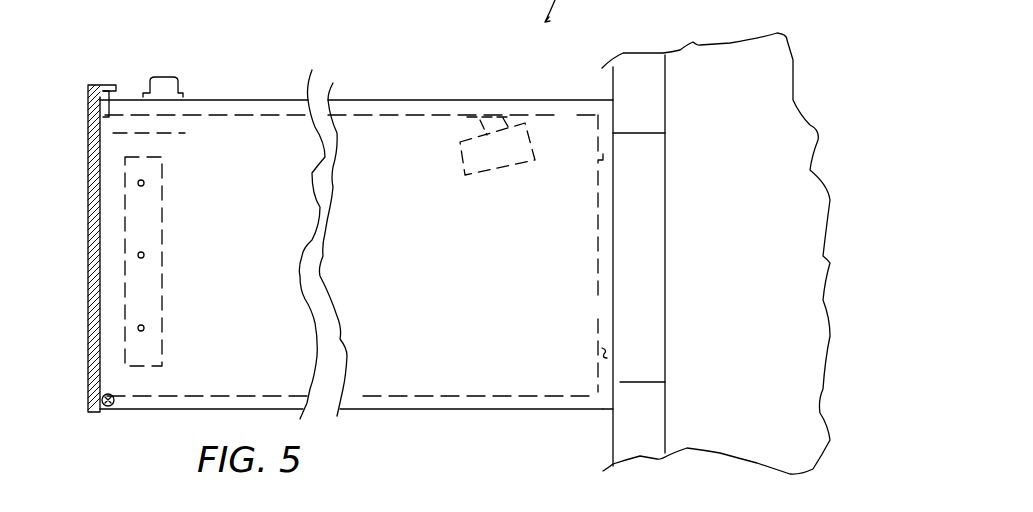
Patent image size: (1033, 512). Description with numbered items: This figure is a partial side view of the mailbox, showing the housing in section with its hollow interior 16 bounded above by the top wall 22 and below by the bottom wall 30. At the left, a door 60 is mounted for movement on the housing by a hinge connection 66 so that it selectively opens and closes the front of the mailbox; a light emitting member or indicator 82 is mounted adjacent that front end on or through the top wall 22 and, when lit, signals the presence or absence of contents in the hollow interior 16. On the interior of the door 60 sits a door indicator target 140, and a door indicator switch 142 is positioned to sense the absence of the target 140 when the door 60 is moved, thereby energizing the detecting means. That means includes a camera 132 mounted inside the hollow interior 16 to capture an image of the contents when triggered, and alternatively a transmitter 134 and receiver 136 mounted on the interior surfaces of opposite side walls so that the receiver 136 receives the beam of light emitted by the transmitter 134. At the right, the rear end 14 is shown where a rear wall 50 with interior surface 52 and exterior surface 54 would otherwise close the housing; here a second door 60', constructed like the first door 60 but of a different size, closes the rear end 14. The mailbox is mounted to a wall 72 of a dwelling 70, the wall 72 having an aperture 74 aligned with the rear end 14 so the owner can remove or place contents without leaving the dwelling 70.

The rear end 14 is at (583, 262).
The hollow interior 16 is at (385, 243).
The top wall 22 is at (355, 100).
The bottom wall 30 is at (385, 404).
The rear wall 50 is at (603, 397).
The interior surface 52 is at (598, 365).
The exterior surface 54 is at (610, 368).
The door 60 is at (84, 219).
The door 60' is at (684, 266).
The hinge connection 66 is at (113, 410).
The dwelling 70 is at (783, 419).
The wall 72 is at (647, 73).
The aperture 74 is at (642, 140).
The light emitting member or indicator 82 is at (172, 72).
The camera 132 is at (503, 163).
The transmitter 134 is at (160, 328).
The receiver 136 is at (141, 255).
The door indicator target 140 is at (100, 127).
The door indicator switch 142 is at (172, 125).